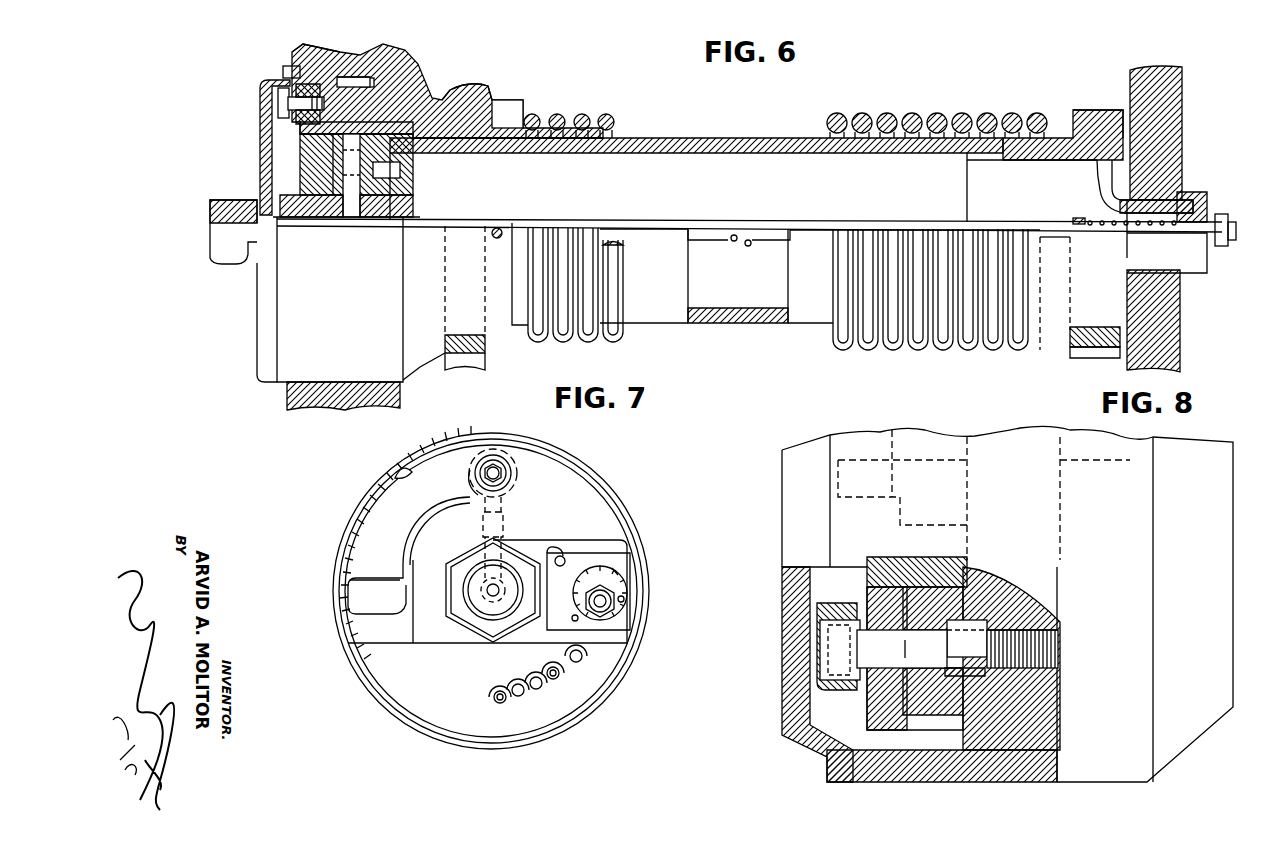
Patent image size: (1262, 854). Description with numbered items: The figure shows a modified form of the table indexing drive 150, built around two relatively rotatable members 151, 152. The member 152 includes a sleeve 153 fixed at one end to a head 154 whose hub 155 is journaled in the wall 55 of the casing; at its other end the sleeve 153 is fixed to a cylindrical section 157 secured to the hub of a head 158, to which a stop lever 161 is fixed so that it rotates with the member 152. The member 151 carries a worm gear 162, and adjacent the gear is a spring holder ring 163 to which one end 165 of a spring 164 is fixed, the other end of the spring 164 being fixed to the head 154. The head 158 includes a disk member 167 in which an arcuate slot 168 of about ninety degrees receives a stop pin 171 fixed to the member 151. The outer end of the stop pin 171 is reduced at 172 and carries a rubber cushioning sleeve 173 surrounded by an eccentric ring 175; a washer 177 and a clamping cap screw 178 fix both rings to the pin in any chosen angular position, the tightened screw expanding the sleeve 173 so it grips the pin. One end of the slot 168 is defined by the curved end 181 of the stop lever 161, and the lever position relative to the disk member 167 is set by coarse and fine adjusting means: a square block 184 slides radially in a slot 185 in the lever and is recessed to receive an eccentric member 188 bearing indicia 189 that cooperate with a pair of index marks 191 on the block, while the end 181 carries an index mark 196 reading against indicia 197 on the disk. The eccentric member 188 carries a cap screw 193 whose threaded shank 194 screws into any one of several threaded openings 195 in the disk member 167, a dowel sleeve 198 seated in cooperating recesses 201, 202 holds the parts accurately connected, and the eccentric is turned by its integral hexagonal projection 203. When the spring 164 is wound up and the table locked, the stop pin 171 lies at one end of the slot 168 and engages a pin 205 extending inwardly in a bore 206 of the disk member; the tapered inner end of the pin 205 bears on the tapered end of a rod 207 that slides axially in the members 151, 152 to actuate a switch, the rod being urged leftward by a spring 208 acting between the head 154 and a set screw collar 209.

In FIG. 6, the wall 55 is at (1175, 112).
In FIG. 6, the drive assembly 150 is at (582, 89).
In FIG. 6, the relatively rotatable member 151 is at (437, 66).
In FIG. 7, the relatively rotatable member 151 is at (386, 730).
In FIG. 8, the relatively rotatable member 151 is at (950, 789).
In FIG. 6, the relatively rotatable member 152 is at (1043, 98).
In FIG. 6, the sleeve 153 is at (764, 138).
In FIG. 6, the head 154 is at (1060, 124).
In FIG. 6, the hub 155 is at (1150, 206).
In FIG. 6, the cylindrical section 157 is at (480, 152).
In FIG. 6, the head 158 is at (325, 238).
In FIG. 6, the stop lever 161 is at (318, 160).
In FIG. 7, the stop lever 161 is at (555, 537).
In FIG. 8, the stop lever 161 is at (945, 572).
In FIG. 6, the worm gear 162 is at (470, 88).
In FIG. 6, the spring holder ring 163 is at (498, 336).
In FIG. 6, the spring 164 is at (607, 114).
In FIG. 6, the spring end 165 is at (508, 104).
In FIG. 6, the disk member 167 is at (358, 72).
In FIG. 8, the disk member 167 is at (1040, 598).
In FIG. 6, the arcuate slot 168 is at (371, 78).
In FIG. 7, the arcuate slot 168 is at (368, 535).
In FIG. 6, the stop pin 171 is at (409, 62).
In FIG. 6, the reduced end 172 is at (283, 72).
In FIG. 6, the cushioning sleeve 173 is at (300, 122).
In FIG. 7, the cushioning sleeve 173 is at (490, 452).
In FIG. 6, the eccentric ring 175 is at (292, 58).
In FIG. 7, the eccentric ring 175 is at (472, 470).
In FIG. 6, the washer 177 is at (259, 91).
In FIG. 7, the washer 177 is at (508, 462).
In FIG. 6, the clamping cap screw 178 is at (278, 110).
In FIG. 7, the clamping cap screw 178 is at (498, 462).
In FIG. 7, the end of stop lever 181 is at (362, 628).
In FIG. 7, the square block 184 is at (565, 558).
In FIG. 7, the slot 185 is at (575, 552).
In FIG. 7, the eccentric member 188 is at (627, 588).
In FIG. 8, the eccentric member 188 is at (852, 588).
In FIG. 7, the indicia 189 is at (616, 572).
In FIG. 7, the index marks 191 is at (625, 599).
In FIG. 7, the cap screw 193 is at (606, 608).
In FIG. 8, the cap screw 193 is at (834, 649).
In FIG. 8, the threaded shank 194 is at (1038, 655).
In FIG. 7, the screw threaded openings 195 is at (558, 684).
In FIG. 8, the screw threaded openings 195 is at (1015, 636).
In FIG. 7, the index mark 196 is at (346, 610).
In FIG. 7, the indicia 197 is at (385, 478).
In FIG. 8, the dowel sleeve 198 is at (975, 622).
In FIG. 7, the recess 201 is at (552, 675).
In FIG. 8, the recess 201 is at (985, 672).
In FIG. 8, the recess 202 is at (935, 680).
In FIG. 7, the hexagonal projection 203 is at (614, 606).
In FIG. 8, the hexagonal projection 203 is at (820, 686).
In FIG. 6, the pin 205 is at (372, 198).
In FIG. 7, the pin 205 is at (503, 535).
In FIG. 6, the bore 206 is at (368, 204).
In FIG. 6, the rod 207 is at (754, 236).
In FIG. 7, the rod 207 is at (463, 578).
In FIG. 6, the spring 208 is at (1112, 232).
In FIG. 6, the set screw collar 209 is at (1070, 220).